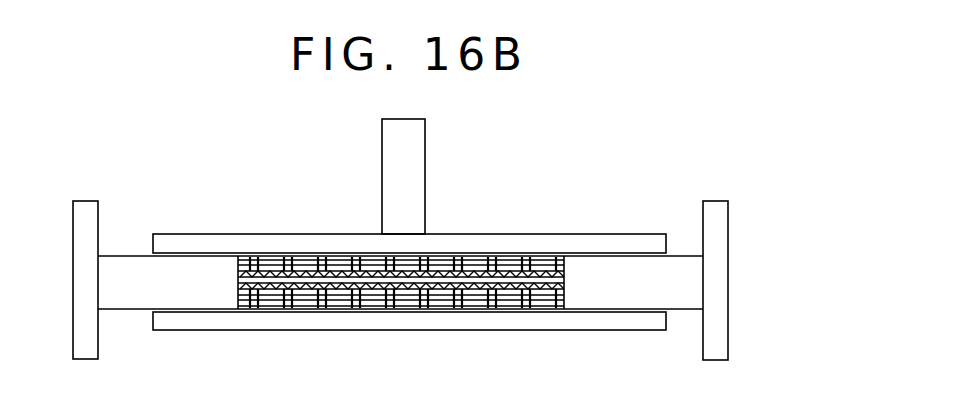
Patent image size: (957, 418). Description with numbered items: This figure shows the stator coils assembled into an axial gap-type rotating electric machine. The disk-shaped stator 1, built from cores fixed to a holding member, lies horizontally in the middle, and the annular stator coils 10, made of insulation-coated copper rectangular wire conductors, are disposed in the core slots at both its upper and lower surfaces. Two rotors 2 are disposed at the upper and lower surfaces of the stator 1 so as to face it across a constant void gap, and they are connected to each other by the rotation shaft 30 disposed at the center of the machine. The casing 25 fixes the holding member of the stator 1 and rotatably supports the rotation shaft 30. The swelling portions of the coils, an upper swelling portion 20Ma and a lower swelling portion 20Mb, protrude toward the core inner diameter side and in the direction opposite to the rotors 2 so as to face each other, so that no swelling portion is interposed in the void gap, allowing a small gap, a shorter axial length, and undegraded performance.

The casing 25 is at (83, 208).
The stator 1 is at (608, 268).
The rotors 2 is at (228, 240).
The rotation shaft 30 is at (413, 205).
The stator coils 10 is at (505, 262).
The upper swelling portion 20Ma is at (558, 276).
The lower swelling portion 20Mb is at (558, 287).